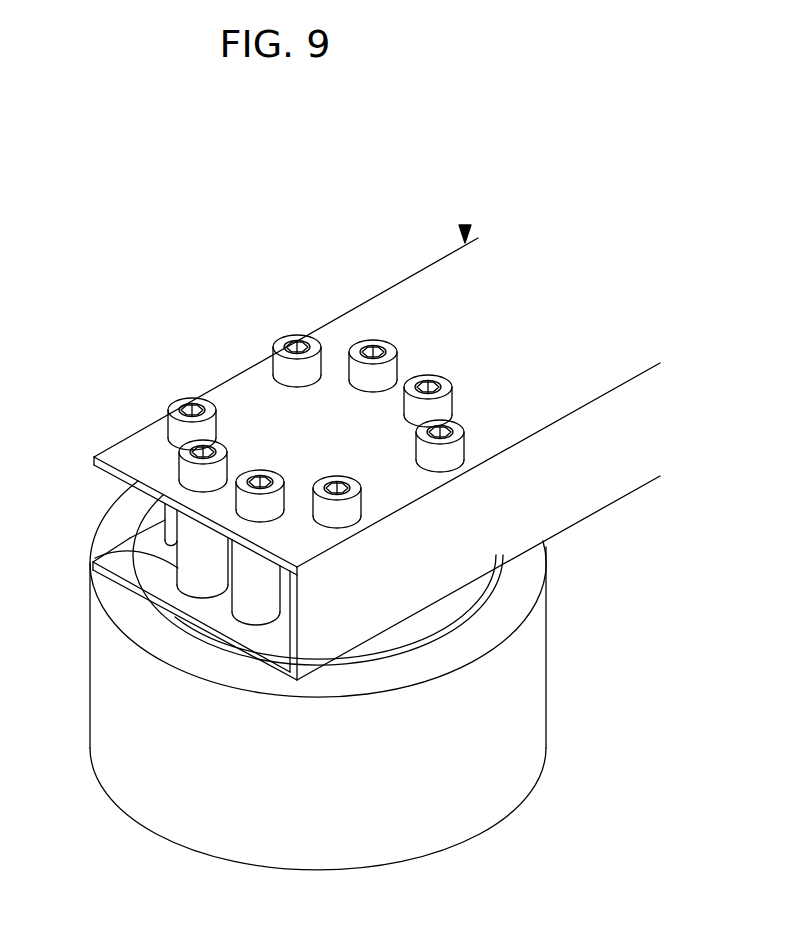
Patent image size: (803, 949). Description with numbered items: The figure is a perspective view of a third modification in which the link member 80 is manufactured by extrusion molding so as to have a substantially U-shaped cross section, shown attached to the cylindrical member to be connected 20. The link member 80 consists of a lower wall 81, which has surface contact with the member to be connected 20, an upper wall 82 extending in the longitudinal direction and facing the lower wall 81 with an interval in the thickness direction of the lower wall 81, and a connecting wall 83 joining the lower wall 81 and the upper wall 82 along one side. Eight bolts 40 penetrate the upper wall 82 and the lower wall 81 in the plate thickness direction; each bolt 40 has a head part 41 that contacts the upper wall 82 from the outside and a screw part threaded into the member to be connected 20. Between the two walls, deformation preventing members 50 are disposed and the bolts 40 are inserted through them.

The member to be connected 20 is at (470, 597).
The bolt 40 is at (331, 381).
The head part 41 is at (273, 368).
The deformation preventing member 50 is at (140, 550).
The link member 80 is at (376, 460).
The lower wall 81 is at (241, 640).
The upper wall 82 is at (416, 303).
The connecting wall 83 is at (563, 490).